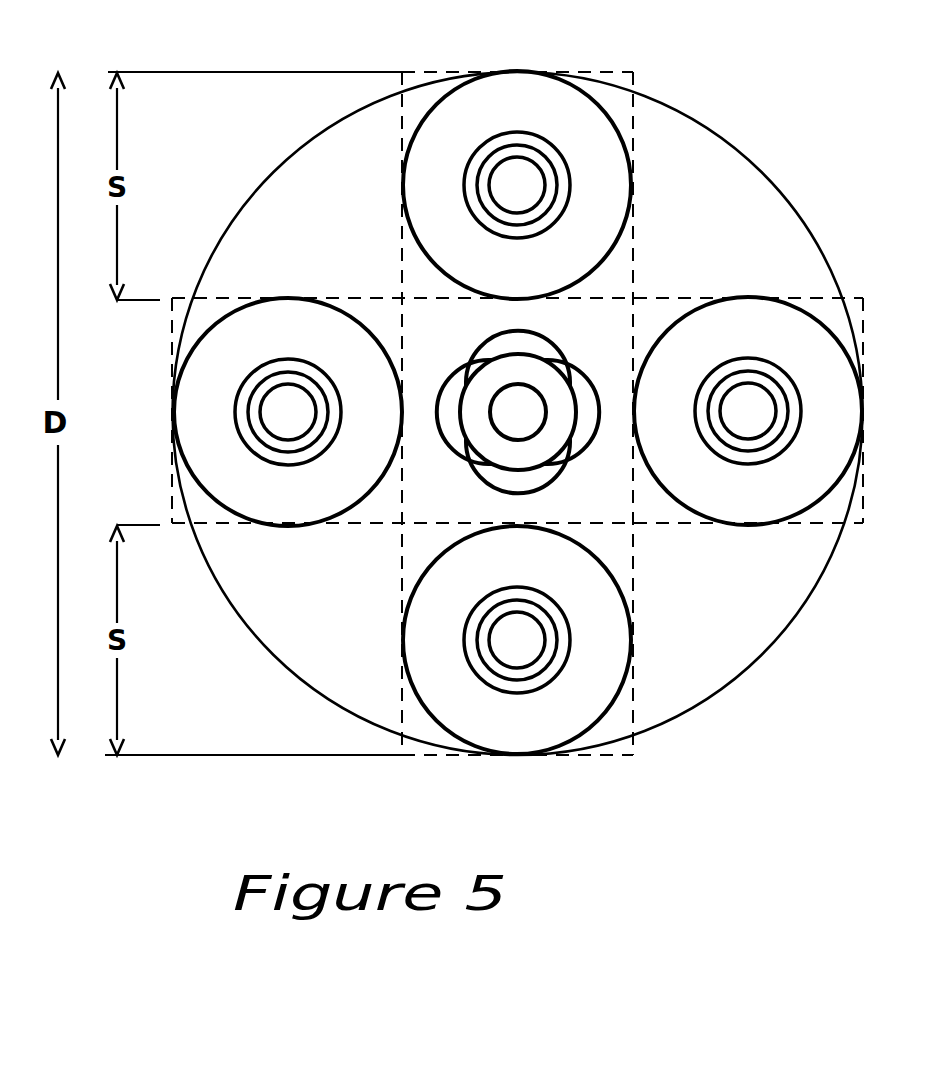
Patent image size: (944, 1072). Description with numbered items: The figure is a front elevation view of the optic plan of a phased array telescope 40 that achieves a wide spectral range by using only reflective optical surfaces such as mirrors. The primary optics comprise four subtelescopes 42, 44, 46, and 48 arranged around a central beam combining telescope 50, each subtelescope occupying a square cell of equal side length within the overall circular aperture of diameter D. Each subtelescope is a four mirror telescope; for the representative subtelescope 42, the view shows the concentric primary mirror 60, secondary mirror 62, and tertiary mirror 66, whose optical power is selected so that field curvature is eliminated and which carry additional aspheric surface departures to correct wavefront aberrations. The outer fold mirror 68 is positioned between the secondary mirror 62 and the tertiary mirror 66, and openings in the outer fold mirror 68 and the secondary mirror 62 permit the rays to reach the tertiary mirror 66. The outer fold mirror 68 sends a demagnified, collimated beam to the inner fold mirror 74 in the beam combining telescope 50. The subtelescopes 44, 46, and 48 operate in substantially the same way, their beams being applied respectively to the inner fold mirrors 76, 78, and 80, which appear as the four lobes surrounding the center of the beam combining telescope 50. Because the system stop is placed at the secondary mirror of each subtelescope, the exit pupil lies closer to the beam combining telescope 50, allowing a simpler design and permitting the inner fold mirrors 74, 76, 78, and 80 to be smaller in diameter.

The phased array telescope 40 is at (613, 785).
The subtelescope 42 is at (636, 262).
The subtelescope 44 is at (402, 574).
The subtelescope 46 is at (700, 298).
The subtelescope 48 is at (218, 528).
The beam combining telescope 50 is at (564, 457).
The primary mirror 60 is at (611, 121).
The secondary mirror 62 is at (464, 179).
The tertiary mirror 66 is at (516, 160).
The outer fold mirror 68 is at (512, 228).
The inner fold mirror 74 is at (517, 495).
The inner fold mirror 76 is at (518, 331).
The inner fold mirror 78 is at (437, 411).
The inner fold mirror 80 is at (600, 412).